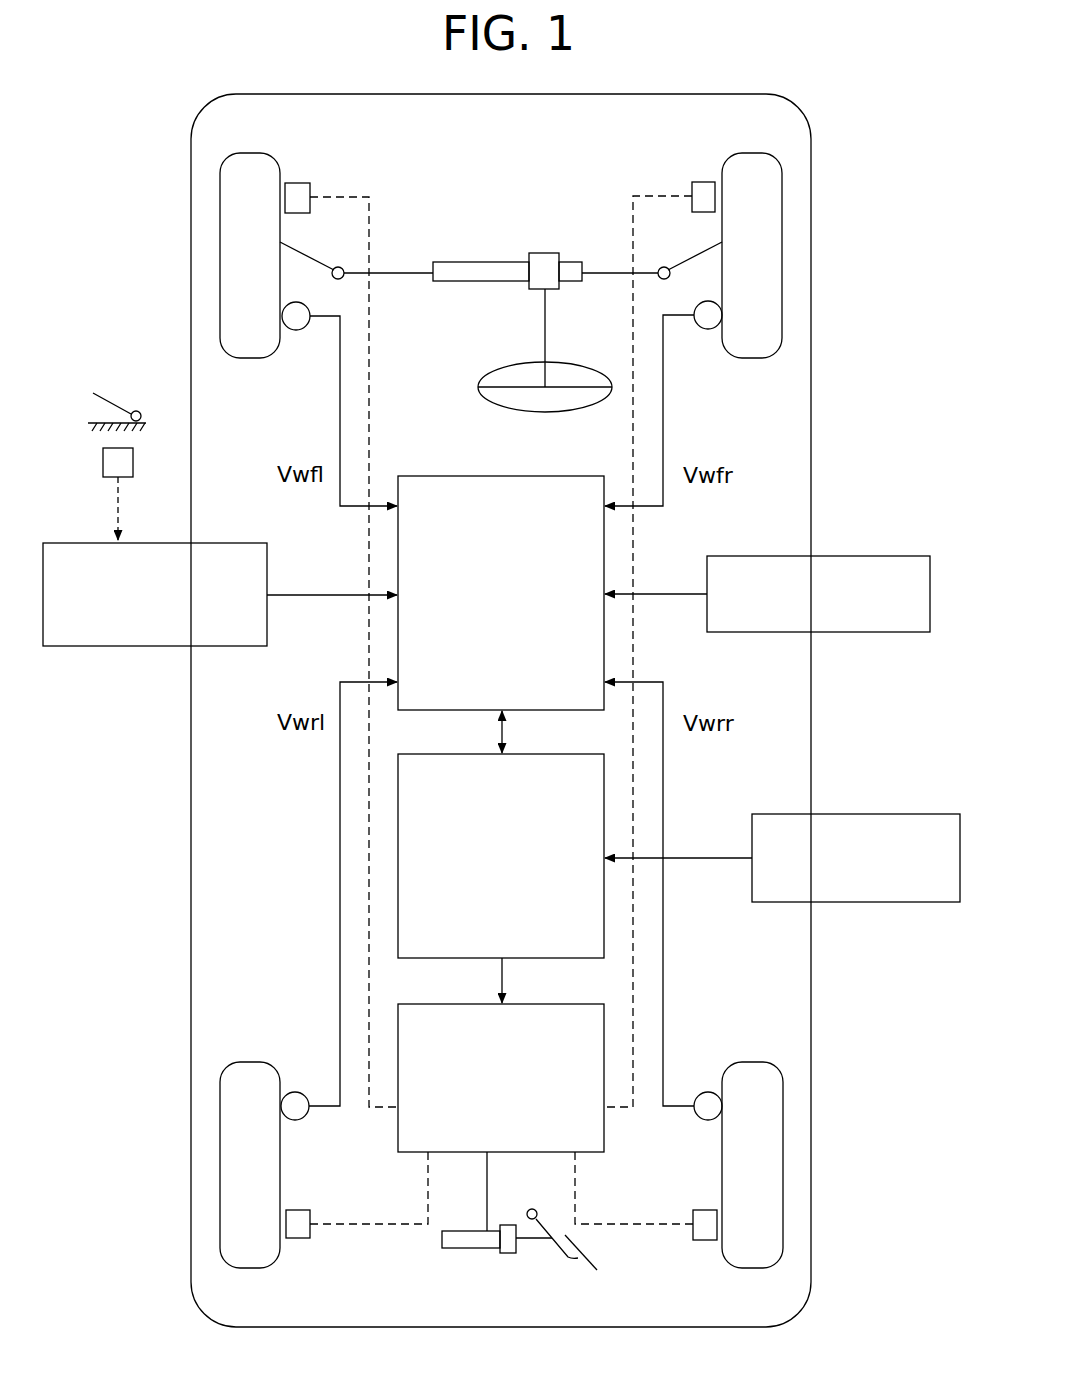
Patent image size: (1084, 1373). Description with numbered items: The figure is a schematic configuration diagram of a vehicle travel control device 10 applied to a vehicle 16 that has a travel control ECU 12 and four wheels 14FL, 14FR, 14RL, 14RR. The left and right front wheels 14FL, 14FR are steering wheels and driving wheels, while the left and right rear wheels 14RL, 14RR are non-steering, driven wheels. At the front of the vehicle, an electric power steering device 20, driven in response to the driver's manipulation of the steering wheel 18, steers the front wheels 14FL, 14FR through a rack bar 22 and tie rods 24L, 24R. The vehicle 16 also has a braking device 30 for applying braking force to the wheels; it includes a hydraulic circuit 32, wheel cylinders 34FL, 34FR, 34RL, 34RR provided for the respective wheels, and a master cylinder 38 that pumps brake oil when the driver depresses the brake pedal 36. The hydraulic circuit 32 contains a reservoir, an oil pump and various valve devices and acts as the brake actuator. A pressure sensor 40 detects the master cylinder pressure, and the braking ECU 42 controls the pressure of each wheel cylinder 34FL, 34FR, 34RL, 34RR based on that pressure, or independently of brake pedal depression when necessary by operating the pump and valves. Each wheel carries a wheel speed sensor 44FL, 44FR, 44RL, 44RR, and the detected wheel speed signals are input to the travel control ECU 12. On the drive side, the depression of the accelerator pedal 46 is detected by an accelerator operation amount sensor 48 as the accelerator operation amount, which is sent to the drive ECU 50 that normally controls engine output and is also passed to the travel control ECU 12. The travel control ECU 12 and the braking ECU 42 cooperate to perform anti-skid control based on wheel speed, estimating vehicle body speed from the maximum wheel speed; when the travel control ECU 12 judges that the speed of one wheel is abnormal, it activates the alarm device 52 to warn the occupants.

The vehicle travel control device 10 is at (829, 411).
The travel control electronic control unit 12 is at (501, 593).
The left front wheel 14FL is at (220, 228).
The right front wheel 14FR is at (782, 266).
The left rear wheel 14RL is at (220, 1173).
The right rear wheel 14RR is at (783, 1173).
The vehicle 16 is at (811, 205).
The steering wheel 18 is at (543, 412).
The electric power steering device 20 is at (526, 246).
The rack bar 22 is at (405, 275).
The left tie rod 24L is at (290, 245).
The right tie rod 24R is at (711, 247).
The braking device 30 is at (426, 1258).
The hydraulic circuit 32 is at (501, 1117).
The left front wheel cylinder 34FL is at (298, 192).
The right front wheel cylinder 34FR is at (703, 190).
The left rear wheel cylinder 34RL is at (298, 1215).
The right rear wheel cylinder 34RR is at (705, 1213).
The brake pedal 36 is at (595, 1260).
The master cylinder 38 is at (458, 1248).
The pressure sensor 40 is at (883, 902).
The braking ECU 42 is at (501, 857).
The left front wheel speed sensor 44FL is at (294, 323).
The right front wheel speed sensor 44FR is at (706, 322).
The left rear wheel speed sensor 44RL is at (300, 1095).
The right rear wheel speed sensor 44RR is at (706, 1094).
The accelerator pedal 46 is at (110, 393).
The accelerator operation amount sensor 48 is at (103, 463).
The drive ECU 50 is at (118, 646).
The alarm device 52 is at (785, 556).